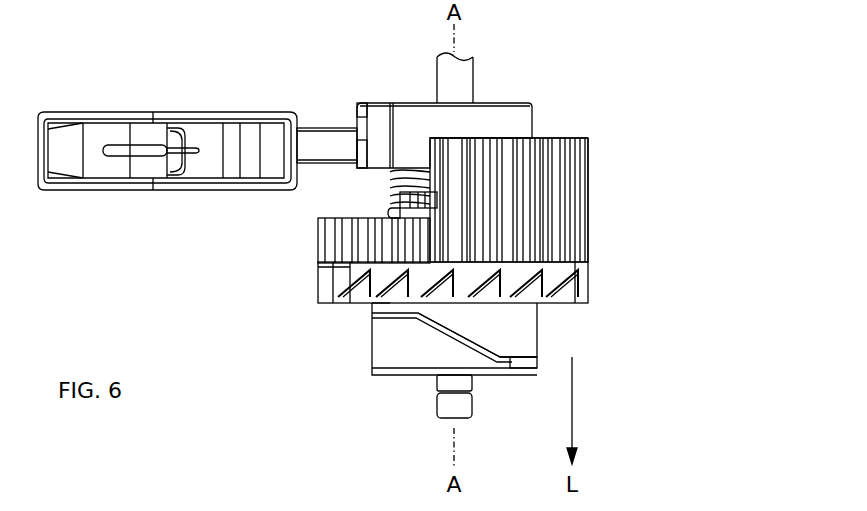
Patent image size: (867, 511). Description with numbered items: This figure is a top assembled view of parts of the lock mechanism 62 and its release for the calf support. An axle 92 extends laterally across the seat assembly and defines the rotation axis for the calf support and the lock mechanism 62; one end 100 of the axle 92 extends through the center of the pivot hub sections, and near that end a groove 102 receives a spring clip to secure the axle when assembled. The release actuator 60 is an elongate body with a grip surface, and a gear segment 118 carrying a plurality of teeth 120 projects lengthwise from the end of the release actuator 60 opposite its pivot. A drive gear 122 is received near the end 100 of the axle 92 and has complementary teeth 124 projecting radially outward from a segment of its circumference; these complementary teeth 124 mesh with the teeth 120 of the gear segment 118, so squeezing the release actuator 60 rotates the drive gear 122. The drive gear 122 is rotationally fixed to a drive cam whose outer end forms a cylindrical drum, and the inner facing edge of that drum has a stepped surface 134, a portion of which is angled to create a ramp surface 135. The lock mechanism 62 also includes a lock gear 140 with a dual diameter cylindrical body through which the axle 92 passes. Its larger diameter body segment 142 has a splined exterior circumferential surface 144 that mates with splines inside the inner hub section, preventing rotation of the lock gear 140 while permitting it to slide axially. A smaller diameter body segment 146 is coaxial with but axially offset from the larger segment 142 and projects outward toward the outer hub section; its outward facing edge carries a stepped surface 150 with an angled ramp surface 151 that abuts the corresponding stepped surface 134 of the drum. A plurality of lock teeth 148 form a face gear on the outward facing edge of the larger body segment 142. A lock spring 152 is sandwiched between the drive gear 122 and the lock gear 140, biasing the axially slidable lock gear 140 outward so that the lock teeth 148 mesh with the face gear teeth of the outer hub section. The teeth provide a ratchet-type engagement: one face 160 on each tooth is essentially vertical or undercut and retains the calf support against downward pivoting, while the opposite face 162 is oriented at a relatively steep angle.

The release actuator 60 is at (138, 196).
The lock mechanism 62 is at (640, 158).
The axle 92 is at (460, 80).
The end of the axle 100 is at (440, 406).
The groove 102 is at (440, 390).
The gear segment 118 is at (325, 172).
The teeth 120 is at (361, 148).
The drive gear 122 is at (512, 112).
The complementary teeth 124 is at (362, 106).
The stepped surface 134 is at (380, 338).
The ramp surface 135 is at (435, 340).
The lock gear 140 is at (605, 258).
The larger diameter body segment 142 is at (598, 216).
The exterior circumferential surface 144 is at (550, 153).
The smaller diameter body segment 146 is at (366, 311).
The lock teeth 148 is at (465, 340).
The stepped surface 150 is at (527, 357).
The ramp surface 151 is at (480, 347).
The lock spring 152 is at (390, 190).
The tooth face 160 is at (350, 290).
The opposite tooth face 162 is at (588, 292).